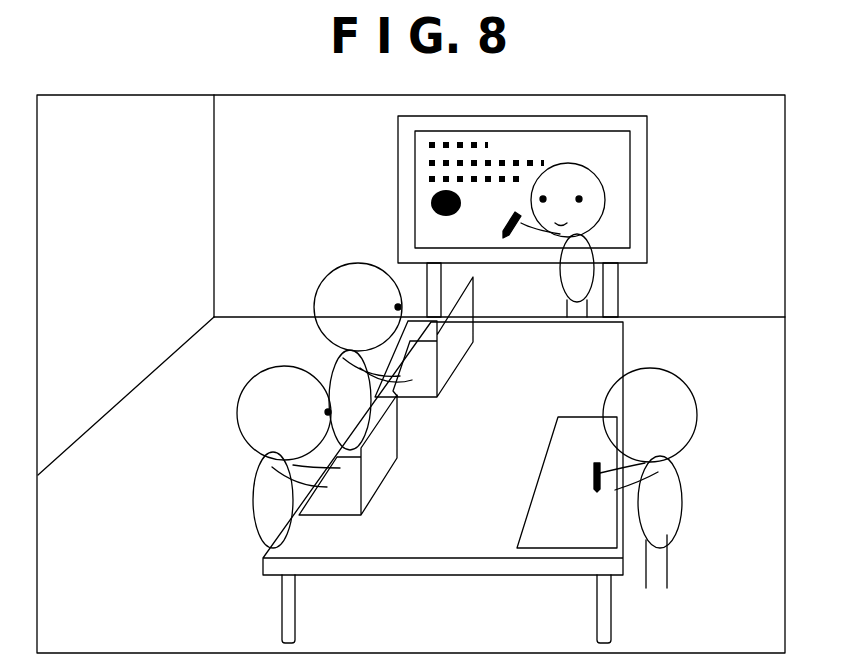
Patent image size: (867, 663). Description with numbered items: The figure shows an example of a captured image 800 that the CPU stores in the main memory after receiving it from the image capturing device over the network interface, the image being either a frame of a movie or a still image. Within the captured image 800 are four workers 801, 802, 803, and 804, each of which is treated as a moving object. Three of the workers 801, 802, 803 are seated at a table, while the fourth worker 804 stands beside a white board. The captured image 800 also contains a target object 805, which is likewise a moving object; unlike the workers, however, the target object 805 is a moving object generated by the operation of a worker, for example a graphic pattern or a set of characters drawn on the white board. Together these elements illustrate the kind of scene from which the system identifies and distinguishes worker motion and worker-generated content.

The captured image 800 is at (90, 94).
The worker 801 is at (328, 277).
The worker 802 is at (237, 416).
The worker 803 is at (650, 369).
The worker 804 is at (607, 200).
The target object 805 is at (425, 163).